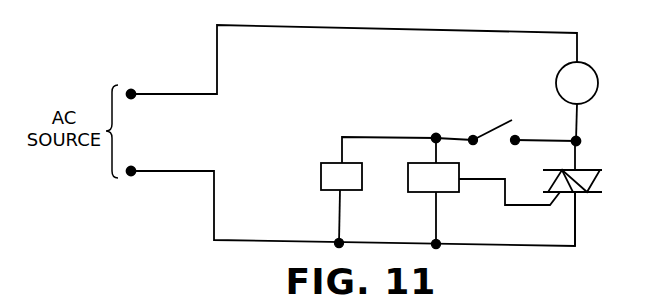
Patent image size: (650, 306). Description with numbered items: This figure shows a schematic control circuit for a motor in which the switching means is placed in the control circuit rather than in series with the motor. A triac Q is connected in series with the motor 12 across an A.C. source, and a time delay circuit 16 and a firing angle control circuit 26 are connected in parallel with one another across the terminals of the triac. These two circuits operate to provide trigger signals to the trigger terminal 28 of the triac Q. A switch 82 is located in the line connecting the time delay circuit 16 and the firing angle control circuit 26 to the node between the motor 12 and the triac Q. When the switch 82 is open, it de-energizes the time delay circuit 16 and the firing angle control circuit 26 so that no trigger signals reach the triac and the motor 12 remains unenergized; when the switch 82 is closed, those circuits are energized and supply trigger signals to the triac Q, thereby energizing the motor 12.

The motor 12 is at (598, 83).
The time delay circuit 16 is at (321, 178).
The firing angle control circuit 26 is at (455, 192).
The trigger terminal 28 is at (559, 198).
The switch 82 is at (492, 128).